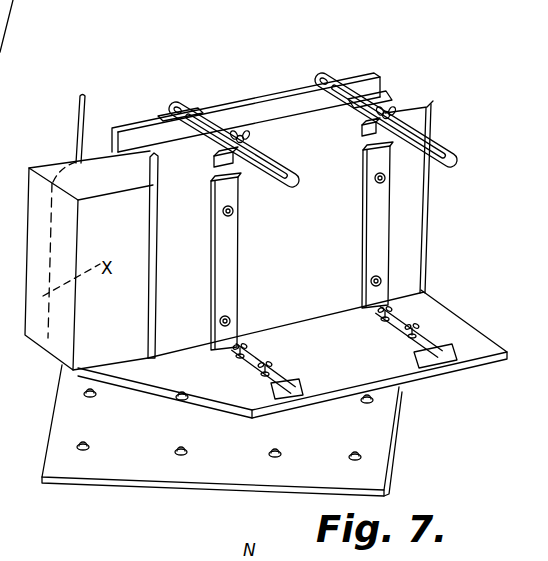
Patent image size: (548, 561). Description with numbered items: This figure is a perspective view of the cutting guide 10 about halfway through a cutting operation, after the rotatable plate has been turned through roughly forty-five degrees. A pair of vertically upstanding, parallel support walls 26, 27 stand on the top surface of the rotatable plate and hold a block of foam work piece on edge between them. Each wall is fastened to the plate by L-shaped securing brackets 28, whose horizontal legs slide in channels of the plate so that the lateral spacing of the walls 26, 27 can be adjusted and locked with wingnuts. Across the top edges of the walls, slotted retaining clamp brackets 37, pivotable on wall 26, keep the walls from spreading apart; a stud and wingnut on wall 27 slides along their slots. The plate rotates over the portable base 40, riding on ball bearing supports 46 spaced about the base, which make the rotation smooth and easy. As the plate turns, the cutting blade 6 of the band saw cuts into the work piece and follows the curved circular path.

The cutting blade 6 is at (84, 98).
The cutting guide 10 is at (215, 85).
The work piece support wall 26 is at (274, 97).
The work piece support wall 27 is at (319, 227).
The L-shaped securing bracket 28 is at (360, 274).
The retaining clamp bracket 37 is at (232, 112).
The base 40 is at (280, 446).
The ball bearing support 46 is at (180, 397).